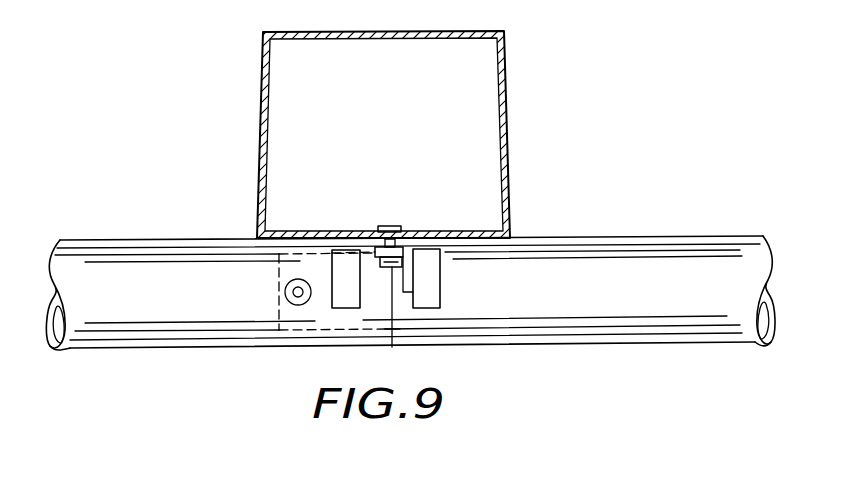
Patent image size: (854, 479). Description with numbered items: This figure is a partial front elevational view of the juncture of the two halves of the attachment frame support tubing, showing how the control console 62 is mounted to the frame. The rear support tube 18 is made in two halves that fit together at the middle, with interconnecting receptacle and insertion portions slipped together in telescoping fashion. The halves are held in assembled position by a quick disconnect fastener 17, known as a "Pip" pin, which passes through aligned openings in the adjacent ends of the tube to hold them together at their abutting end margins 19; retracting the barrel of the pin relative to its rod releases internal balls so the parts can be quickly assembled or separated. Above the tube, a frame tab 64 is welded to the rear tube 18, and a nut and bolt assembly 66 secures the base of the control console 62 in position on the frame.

The control console 62 is at (512, 88).
The rear support tube 18 is at (624, 243).
The quick disconnect fastener 17 is at (285, 292).
The abutting end margins 19 is at (395, 317).
The frame tab 64 is at (399, 253).
The nut and bolt assembly 66 is at (393, 226).